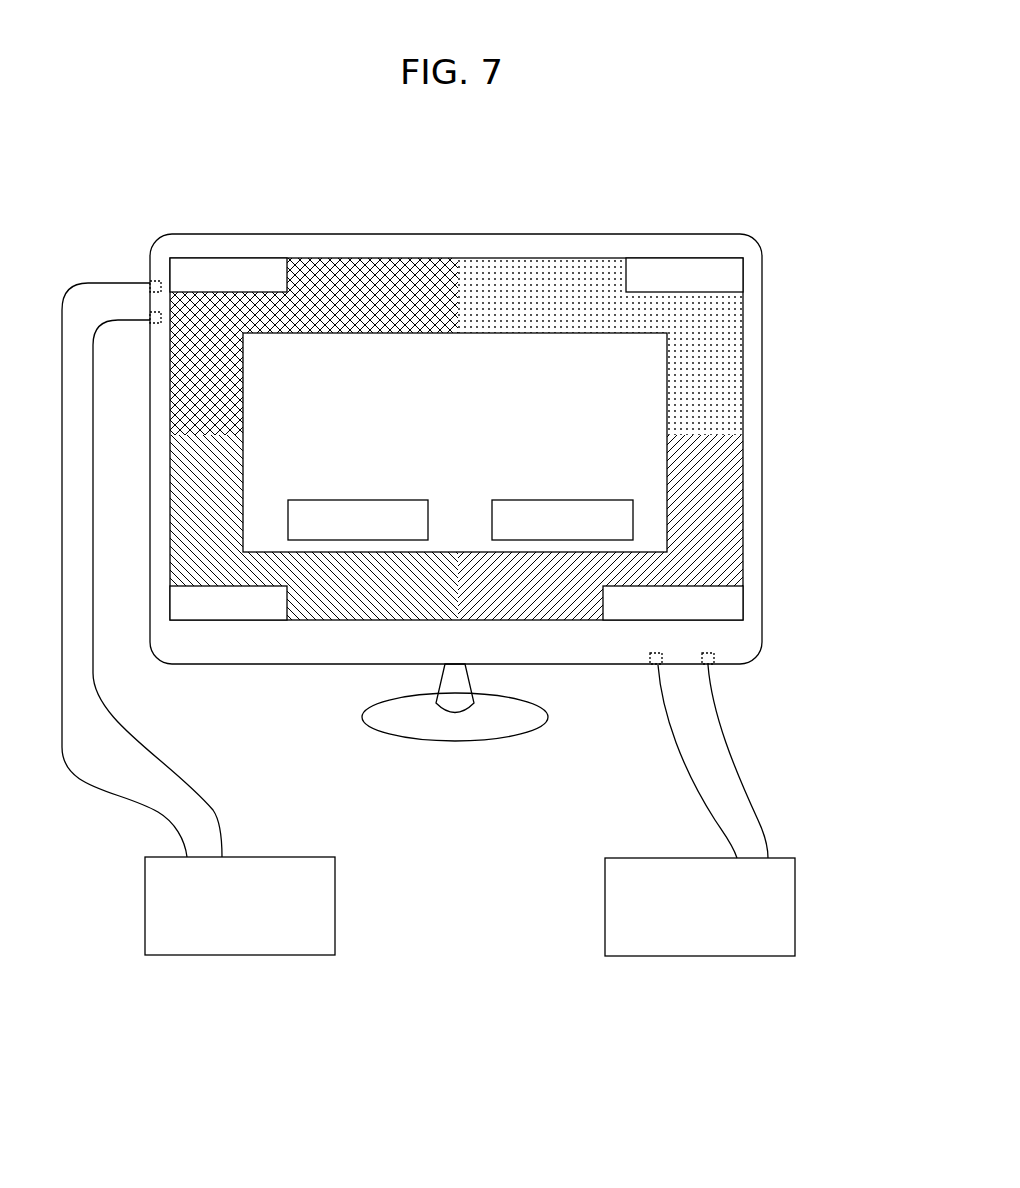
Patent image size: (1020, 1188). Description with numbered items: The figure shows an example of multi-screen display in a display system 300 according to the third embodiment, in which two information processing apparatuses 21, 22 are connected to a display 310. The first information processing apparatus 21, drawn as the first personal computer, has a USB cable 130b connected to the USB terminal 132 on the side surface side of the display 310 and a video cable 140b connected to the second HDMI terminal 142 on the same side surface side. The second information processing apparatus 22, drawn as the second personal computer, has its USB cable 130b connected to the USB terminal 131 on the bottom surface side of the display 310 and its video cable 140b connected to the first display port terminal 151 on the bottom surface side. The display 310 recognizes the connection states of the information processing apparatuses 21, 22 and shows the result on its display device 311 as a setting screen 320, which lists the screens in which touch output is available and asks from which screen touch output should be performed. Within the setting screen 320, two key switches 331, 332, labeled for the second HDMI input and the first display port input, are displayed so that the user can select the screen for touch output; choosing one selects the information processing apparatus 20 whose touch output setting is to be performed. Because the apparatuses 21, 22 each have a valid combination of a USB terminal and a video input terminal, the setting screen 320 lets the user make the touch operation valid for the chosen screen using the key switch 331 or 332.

The display system 300 is at (718, 223).
The display 310 is at (456, 443).
The display device 311 is at (381, 264).
The setting screen 320 is at (500, 333).
The key switch 331 is at (350, 540).
The key switch 332 is at (548, 540).
The USB terminal 132 is at (153, 280).
The HDMI 2 terminal 142 is at (152, 324).
The USB terminal 131 is at (714, 657).
The display port 1 terminal 151 is at (655, 666).
The USB cable 130b is at (158, 812).
The video cable 140b is at (215, 810).
The information processing apparatus 20 is at (470, 950).
The information processing apparatus 21 is at (245, 958).
The information processing apparatus 22 is at (704, 960).